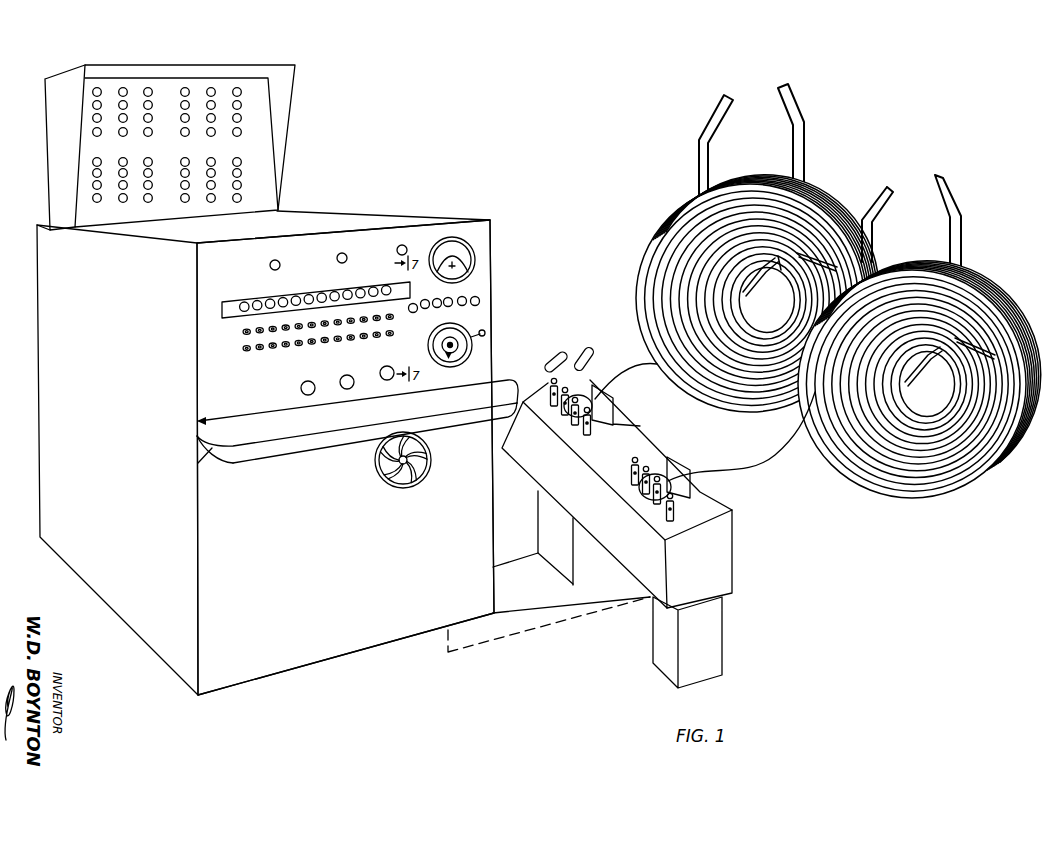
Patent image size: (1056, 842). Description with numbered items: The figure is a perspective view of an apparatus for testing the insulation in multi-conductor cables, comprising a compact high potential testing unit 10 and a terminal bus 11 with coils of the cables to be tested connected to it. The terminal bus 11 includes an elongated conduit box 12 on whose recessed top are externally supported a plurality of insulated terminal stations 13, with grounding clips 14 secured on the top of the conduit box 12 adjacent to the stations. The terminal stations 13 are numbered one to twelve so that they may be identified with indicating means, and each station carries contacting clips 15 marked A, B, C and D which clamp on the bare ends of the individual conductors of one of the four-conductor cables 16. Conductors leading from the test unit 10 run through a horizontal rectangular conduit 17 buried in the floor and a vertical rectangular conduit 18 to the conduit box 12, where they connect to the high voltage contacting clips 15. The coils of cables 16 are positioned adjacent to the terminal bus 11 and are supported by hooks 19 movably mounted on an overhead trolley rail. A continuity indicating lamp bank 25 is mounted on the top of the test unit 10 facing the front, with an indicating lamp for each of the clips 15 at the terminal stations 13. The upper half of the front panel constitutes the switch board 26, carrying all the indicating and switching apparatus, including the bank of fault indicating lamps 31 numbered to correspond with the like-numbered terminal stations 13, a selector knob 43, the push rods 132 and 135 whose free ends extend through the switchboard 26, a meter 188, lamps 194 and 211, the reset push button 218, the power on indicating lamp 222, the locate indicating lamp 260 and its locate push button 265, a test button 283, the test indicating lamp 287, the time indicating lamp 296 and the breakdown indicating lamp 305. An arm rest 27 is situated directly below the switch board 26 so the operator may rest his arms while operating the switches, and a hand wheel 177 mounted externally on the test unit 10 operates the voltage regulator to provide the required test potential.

The high potential testing unit 10 is at (496, 222).
The terminal bus 11 is at (737, 586).
The conduit box 12 is at (727, 563).
The insulated terminal stations 13 is at (618, 480).
The grounding clips 14 is at (611, 384).
The contacting clips 15 is at (565, 349).
The four-conductor cables 16 is at (661, 368).
The horizontal rectangular conduit 17 is at (527, 561).
The vertical rectangular conduit 18 is at (545, 512).
The cable coil with handles 19 is at (795, 128).
The continuity indicating lamp bank 25 is at (294, 127).
The switch board 26 is at (203, 403).
The arm rest 27 is at (290, 455).
The bank of fault indicating lamps 31 is at (219, 308).
The selector knob 43 is at (473, 352).
The push rod 132 is at (247, 338).
The push rod 135 is at (247, 356).
The hand wheel 177 is at (413, 487).
The meter 188 is at (477, 270).
The lamps 194 is at (258, 316).
The panel indicator lamps 211 is at (124, 88).
The reset push button 218 is at (352, 387).
The power on indicating lamp 222 is at (337, 258).
The locate indicating lamp 260 is at (414, 313).
The locate push button 265 is at (304, 392).
The test button 283 is at (390, 380).
The test indicating lamp 287 is at (482, 301).
The time indicating lamp 296 is at (397, 250).
The breakdown indicating lamp 305 is at (270, 265).